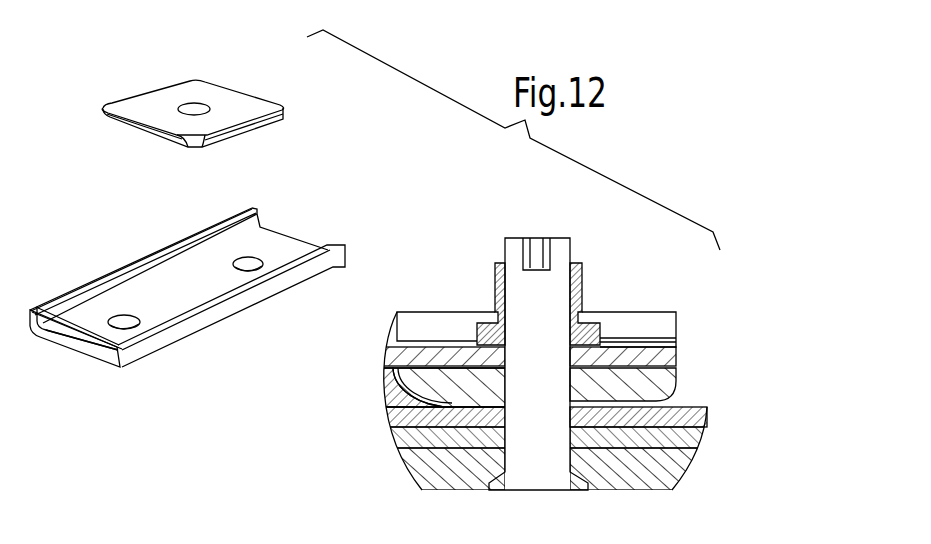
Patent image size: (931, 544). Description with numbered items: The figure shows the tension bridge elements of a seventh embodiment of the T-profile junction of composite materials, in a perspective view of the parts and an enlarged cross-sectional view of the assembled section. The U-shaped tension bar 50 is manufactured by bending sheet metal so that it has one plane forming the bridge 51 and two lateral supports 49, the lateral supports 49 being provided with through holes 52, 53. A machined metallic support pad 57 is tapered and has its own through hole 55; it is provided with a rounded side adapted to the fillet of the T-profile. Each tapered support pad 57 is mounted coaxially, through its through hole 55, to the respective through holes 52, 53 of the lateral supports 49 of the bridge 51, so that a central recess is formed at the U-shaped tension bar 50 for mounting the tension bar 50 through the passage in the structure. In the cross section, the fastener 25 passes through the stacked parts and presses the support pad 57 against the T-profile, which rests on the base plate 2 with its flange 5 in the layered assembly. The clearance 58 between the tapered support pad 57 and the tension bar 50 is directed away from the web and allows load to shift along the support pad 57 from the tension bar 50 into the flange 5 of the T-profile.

The base plate 2 is at (680, 465).
The flange 5 is at (695, 415).
The fastener 25 is at (563, 250).
The lateral support 49 is at (250, 234).
The U-shaped tension bar 50 is at (299, 200).
The bridge 51 is at (167, 278).
The through hole 52 is at (136, 318).
The through hole 53 is at (255, 266).
The through hole 55 is at (192, 106).
The support pad 57 is at (270, 88).
The clearance 58 is at (667, 367).